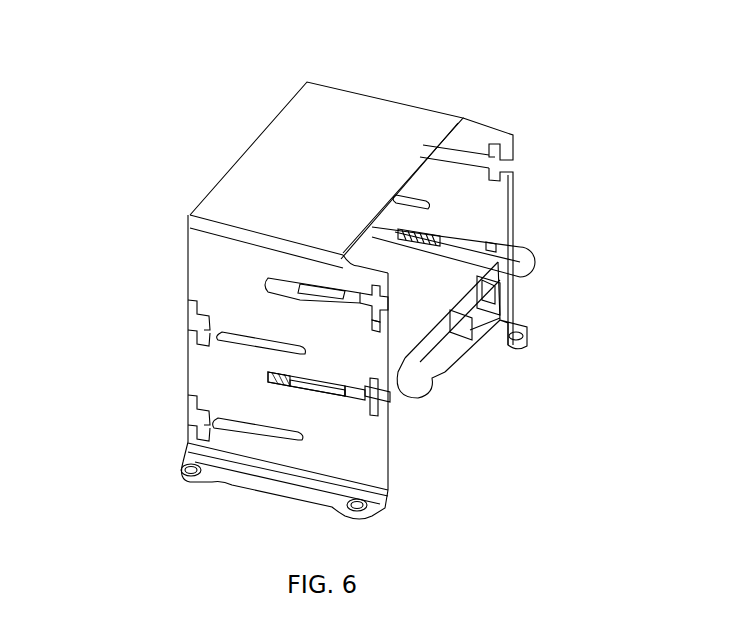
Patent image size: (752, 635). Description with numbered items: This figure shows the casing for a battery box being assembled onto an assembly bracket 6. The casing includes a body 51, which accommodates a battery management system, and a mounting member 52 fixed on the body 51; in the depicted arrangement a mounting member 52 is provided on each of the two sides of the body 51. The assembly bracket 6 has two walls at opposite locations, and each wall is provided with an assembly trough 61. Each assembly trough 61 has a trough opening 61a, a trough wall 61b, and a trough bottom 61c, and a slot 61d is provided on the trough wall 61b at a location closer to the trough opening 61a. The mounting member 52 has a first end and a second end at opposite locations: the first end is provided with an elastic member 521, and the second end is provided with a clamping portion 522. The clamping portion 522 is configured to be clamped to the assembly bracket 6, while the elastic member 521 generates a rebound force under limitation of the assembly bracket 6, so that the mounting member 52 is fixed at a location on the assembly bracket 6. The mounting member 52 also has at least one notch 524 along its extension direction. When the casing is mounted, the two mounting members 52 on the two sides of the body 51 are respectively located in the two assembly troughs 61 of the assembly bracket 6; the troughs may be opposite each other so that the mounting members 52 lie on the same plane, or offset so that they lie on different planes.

The assembly bracket 6 is at (285, 173).
The assembly trough 61 is at (458, 150).
The trough opening 61a is at (390, 306).
The trough wall 61b is at (308, 293).
The trough bottom 61c is at (265, 283).
The slot 61d is at (374, 330).
The body 51 is at (447, 276).
The mounting member 52 is at (347, 394).
The elastic member 521 is at (265, 378).
The clamping portion 522 is at (377, 412).
The notch 524 is at (318, 388).